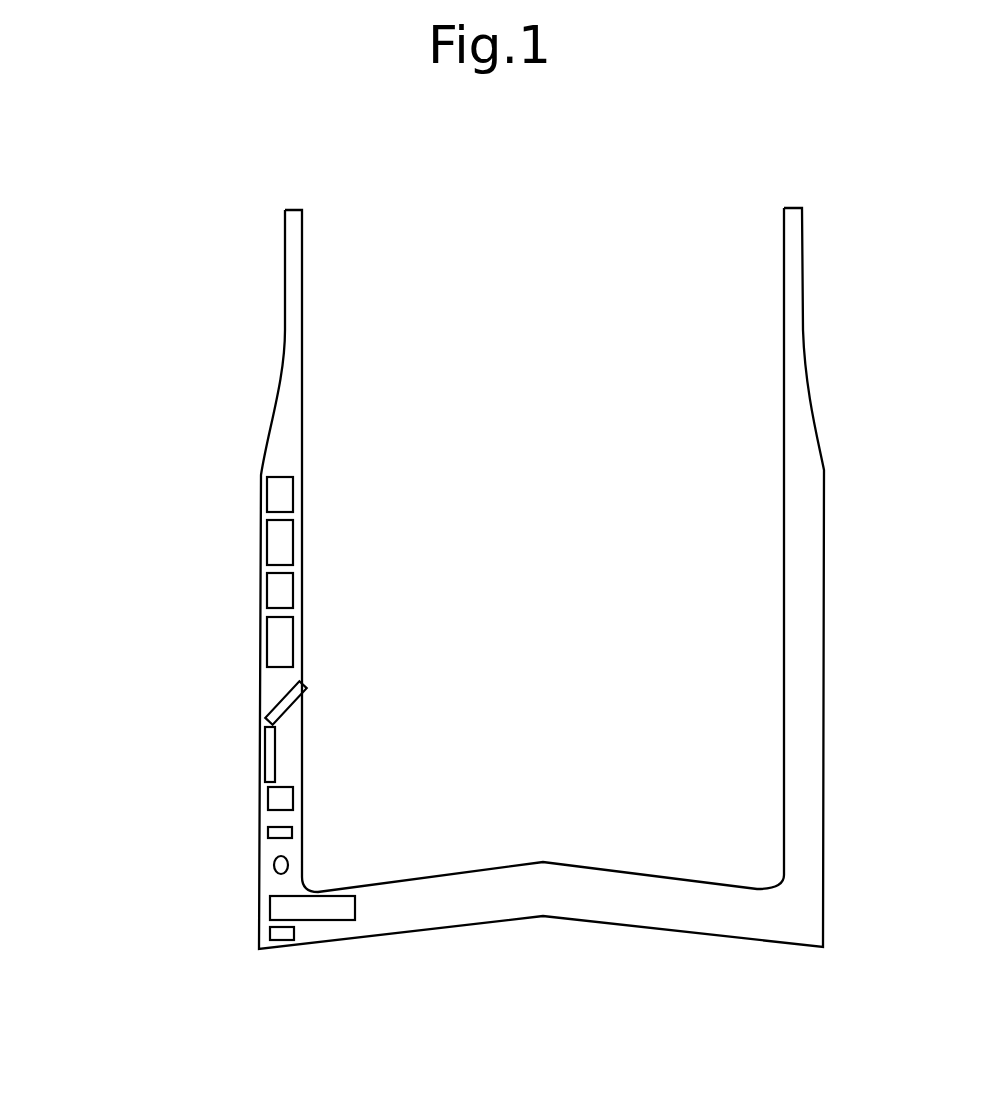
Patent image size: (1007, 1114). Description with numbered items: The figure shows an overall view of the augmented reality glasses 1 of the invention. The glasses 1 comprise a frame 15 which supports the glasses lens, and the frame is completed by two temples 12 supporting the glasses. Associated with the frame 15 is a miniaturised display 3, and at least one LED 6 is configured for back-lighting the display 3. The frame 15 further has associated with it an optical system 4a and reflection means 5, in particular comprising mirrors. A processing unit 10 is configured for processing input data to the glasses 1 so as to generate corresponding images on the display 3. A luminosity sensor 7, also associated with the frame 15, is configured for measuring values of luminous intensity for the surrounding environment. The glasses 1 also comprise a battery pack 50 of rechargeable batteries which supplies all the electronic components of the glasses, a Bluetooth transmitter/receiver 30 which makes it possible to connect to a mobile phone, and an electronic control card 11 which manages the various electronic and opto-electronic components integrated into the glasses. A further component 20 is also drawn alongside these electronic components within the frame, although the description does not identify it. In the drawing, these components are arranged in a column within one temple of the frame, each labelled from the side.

The augmented reality glasses 1 is at (200, 142).
The temples 12 is at (290, 403).
The frame 15 is at (318, 281).
The communication module 20 is at (247, 493).
The Bluetooth transmitter/receiver 30 is at (247, 540).
The processing unit 10 is at (247, 592).
The electronic control card 11 is at (247, 642).
The reflection means 5 is at (207, 699).
The optical system 4a is at (248, 798).
The miniaturised display 3 is at (248, 833).
The LED 6 is at (250, 865).
The battery pack 50 is at (250, 908).
The luminosity sensor 7 is at (250, 935).